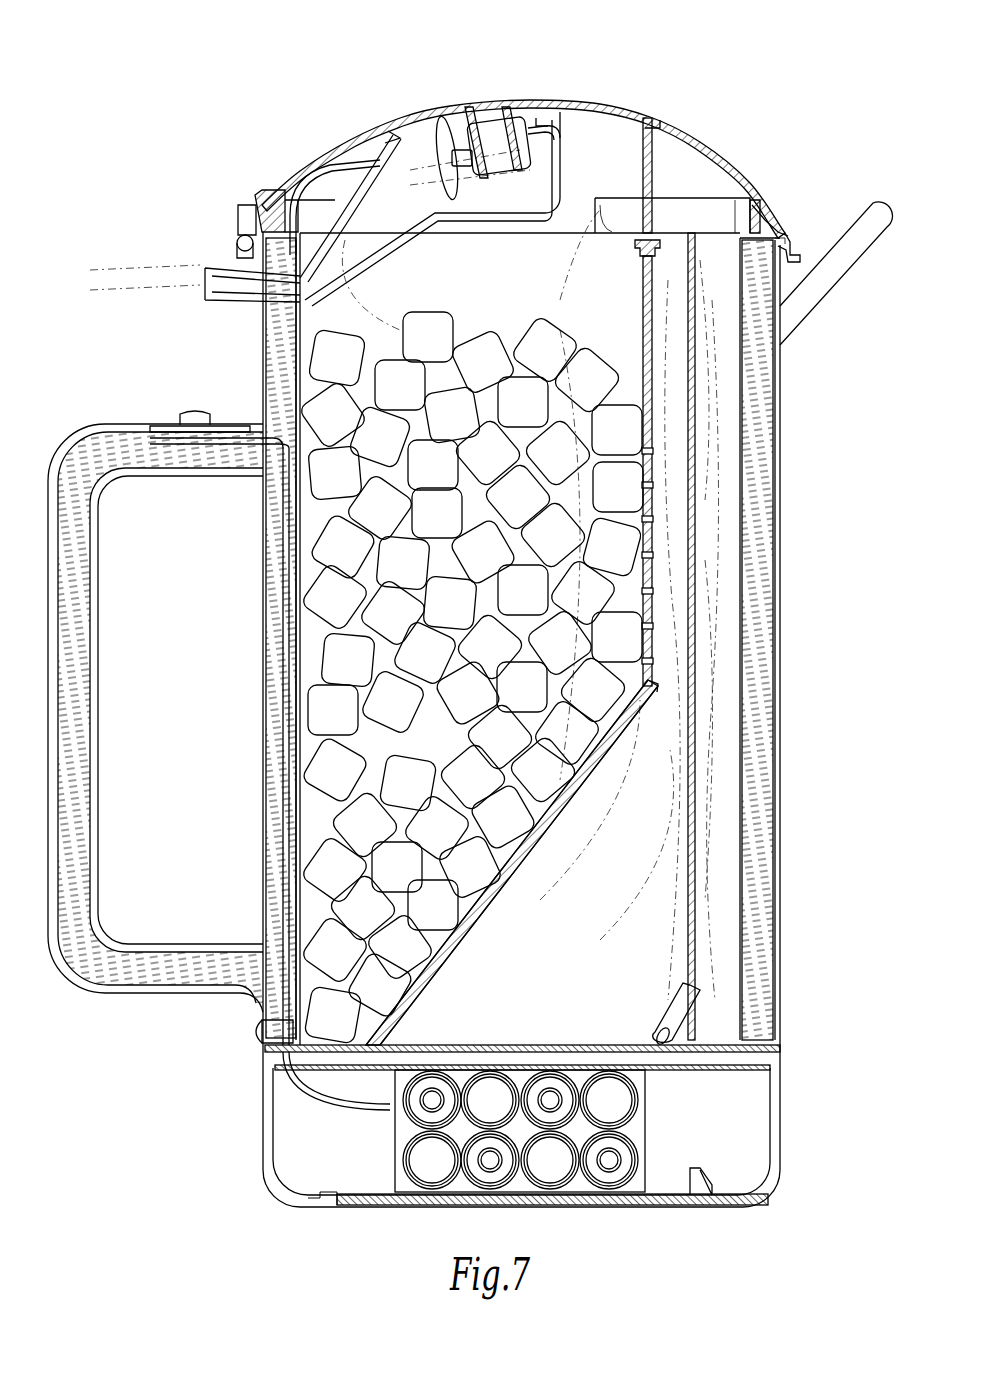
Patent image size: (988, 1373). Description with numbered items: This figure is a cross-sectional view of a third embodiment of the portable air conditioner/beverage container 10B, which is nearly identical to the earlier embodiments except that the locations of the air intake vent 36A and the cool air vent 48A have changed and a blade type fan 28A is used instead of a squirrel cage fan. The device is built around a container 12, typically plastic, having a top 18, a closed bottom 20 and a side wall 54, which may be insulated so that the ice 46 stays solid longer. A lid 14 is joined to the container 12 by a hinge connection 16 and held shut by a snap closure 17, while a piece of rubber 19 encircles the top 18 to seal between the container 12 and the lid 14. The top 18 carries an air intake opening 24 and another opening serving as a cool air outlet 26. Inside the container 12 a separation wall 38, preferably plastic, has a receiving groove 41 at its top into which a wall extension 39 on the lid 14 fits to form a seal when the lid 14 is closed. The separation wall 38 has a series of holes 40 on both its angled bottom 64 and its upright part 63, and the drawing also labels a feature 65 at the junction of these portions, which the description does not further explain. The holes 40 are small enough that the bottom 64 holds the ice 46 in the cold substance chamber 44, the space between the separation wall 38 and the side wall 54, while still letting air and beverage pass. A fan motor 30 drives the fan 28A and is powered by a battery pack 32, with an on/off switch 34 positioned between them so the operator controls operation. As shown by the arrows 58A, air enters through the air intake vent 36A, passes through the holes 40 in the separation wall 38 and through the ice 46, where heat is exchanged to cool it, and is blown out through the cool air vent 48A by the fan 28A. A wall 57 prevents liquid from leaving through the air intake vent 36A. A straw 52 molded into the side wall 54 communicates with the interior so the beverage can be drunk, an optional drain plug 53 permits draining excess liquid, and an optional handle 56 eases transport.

The portable air conditioner/beverage container 10B is at (133, 44).
The container 12 is at (262, 338).
The lid 14 is at (325, 97).
The hinge connection 16 is at (243, 240).
The snap closure 17 is at (875, 230).
The top 18 is at (598, 240).
The piece of rubber 19 is at (758, 215).
The bottom 20 is at (522, 1042).
The air intake opening 24 is at (693, 232).
The cool air outlet 26 is at (455, 270).
The blade type fan 28A is at (470, 130).
The fan motor 30 is at (500, 118).
The battery pack 32 is at (430, 1163).
The on/off switch 34 is at (188, 412).
The air intake vent 36A is at (778, 1020).
The separation wall 38 is at (645, 330).
The wall extension 39 is at (643, 143).
The holes 40 is at (650, 485).
The receiving groove 41 is at (645, 228).
The cold substance chamber 44 is at (380, 745).
The ice 46 is at (340, 600).
The cool air vent 48A is at (222, 268).
The straw 52 is at (828, 212).
The drain plug 53 is at (258, 1028).
The side wall 54 is at (258, 322).
The handle 56 is at (90, 645).
The wall 57 is at (692, 378).
The arrows 58A is at (588, 300).
The upright part 63 is at (652, 342).
The bottom 64 is at (505, 875).
The ramp joint 65 is at (655, 688).